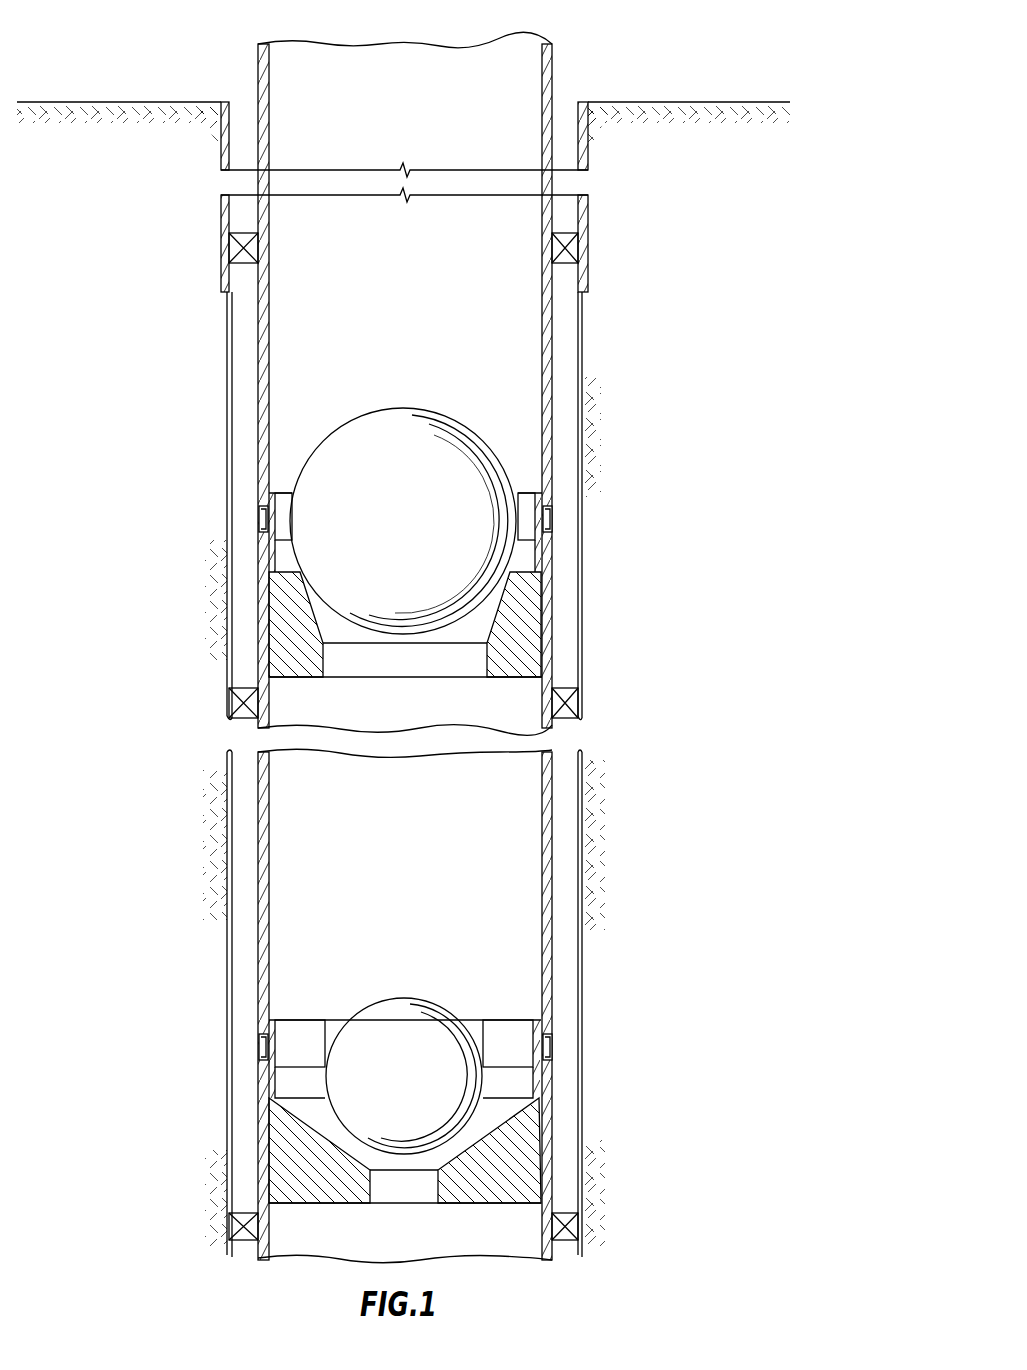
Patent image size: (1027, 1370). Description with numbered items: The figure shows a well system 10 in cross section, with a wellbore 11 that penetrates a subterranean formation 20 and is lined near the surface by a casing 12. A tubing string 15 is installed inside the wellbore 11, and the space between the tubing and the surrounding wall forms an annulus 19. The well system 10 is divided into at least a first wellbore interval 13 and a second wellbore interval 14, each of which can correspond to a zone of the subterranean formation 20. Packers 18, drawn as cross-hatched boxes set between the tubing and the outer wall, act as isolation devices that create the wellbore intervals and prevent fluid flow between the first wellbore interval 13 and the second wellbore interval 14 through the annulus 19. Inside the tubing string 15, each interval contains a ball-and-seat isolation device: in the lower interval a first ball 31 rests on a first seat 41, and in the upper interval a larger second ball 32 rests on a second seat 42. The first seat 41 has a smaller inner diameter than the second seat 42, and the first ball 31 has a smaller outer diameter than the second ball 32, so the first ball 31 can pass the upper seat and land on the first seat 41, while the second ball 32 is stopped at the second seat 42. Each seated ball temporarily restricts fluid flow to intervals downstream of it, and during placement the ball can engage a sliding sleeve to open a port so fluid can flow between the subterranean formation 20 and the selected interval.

The well system 10 is at (80, 58).
The wellbore 11 is at (581, 338).
The casing 12 is at (588, 212).
The first wellbore interval 13 is at (205, 923).
The second wellbore interval 14 is at (205, 480).
The tubing string 15 is at (257, 851).
The packer 18 is at (222, 240).
The annulus 19 is at (568, 977).
The subterranean formation 20 is at (735, 419).
The first ball 31 is at (340, 1085).
The second ball 32 is at (323, 555).
The first seat 41 is at (518, 1134).
The second seat 42 is at (508, 598).